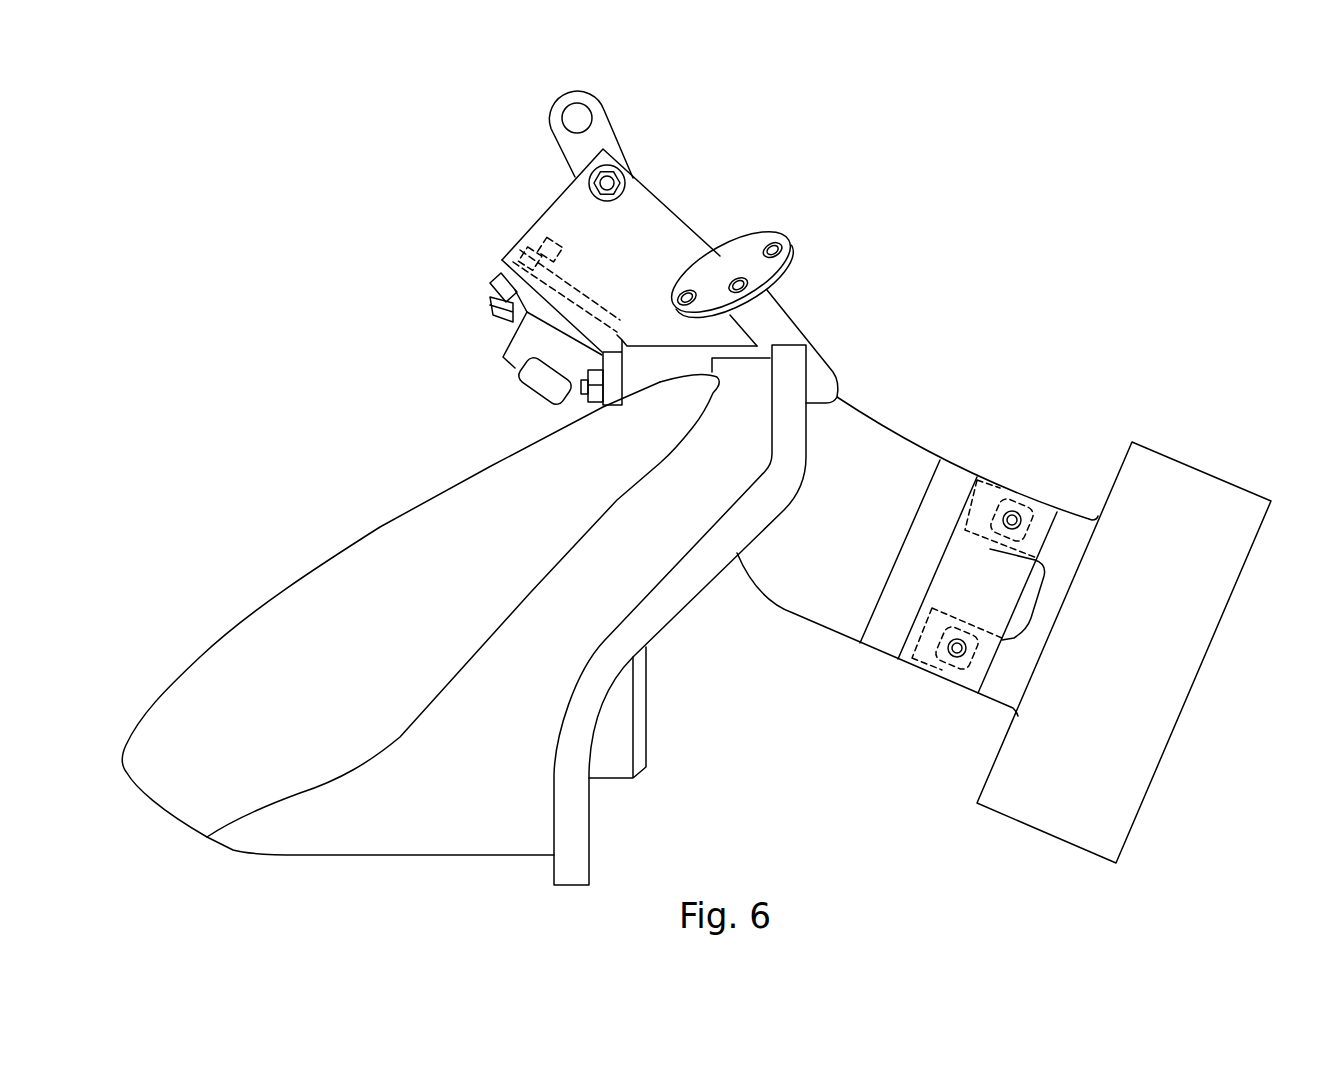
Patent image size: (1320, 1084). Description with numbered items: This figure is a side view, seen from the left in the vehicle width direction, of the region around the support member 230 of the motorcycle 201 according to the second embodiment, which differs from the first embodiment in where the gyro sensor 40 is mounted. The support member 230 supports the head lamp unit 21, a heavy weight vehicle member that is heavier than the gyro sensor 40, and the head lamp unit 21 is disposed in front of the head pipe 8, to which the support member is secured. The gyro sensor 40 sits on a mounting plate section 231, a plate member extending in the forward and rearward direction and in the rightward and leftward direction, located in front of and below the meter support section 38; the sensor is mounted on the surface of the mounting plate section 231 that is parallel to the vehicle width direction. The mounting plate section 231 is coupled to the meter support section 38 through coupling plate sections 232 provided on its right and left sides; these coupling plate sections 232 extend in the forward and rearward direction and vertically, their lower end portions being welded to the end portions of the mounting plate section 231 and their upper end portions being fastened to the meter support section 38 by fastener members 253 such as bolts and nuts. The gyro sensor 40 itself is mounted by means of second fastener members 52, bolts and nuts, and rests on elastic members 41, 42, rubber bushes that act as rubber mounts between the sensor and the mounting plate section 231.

The motorcycle 201 is at (966, 168).
The head pipe 8 is at (1026, 805).
The head lamp unit 21 is at (380, 528).
The coupling plate section 232 is at (683, 230).
The mounting plate section 231 is at (498, 260).
The meter support section 38 is at (600, 128).
The fastener member 253 is at (626, 182).
The support member 230 is at (798, 320).
The elastic member 42 is at (510, 248).
The elastic member 41 is at (502, 273).
The second fastener member 52 is at (488, 317).
The gyro sensor 40 is at (508, 364).